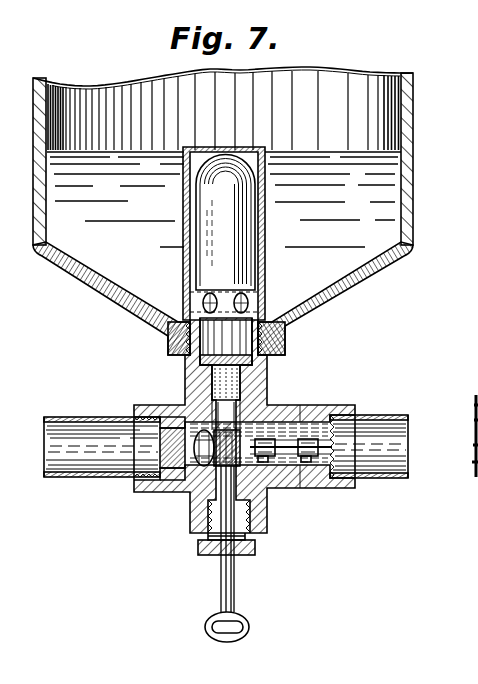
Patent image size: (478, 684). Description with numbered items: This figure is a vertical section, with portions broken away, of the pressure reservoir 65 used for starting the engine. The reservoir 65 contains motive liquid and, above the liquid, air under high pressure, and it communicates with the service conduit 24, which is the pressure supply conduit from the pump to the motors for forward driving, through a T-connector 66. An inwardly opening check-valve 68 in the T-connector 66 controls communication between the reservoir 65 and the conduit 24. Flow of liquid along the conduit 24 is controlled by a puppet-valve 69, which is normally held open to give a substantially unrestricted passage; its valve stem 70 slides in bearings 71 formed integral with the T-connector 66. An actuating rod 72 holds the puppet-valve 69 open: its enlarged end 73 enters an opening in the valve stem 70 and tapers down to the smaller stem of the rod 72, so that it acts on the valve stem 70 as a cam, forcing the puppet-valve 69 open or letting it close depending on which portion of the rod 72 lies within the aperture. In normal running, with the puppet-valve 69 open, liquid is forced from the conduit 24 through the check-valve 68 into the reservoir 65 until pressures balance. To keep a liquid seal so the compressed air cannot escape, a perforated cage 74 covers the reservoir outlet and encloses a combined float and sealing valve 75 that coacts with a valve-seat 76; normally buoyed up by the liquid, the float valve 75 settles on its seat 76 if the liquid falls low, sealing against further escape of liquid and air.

The pressure reservoir 65 is at (413, 128).
The perforated cage 74 is at (278, 236).
The combined float and sealing valve 75 is at (186, 214).
The check-valve 68 is at (243, 436).
The service conduit 24 is at (66, 423).
The puppet-valve 69 is at (178, 478).
The T-connector 66 is at (331, 424).
The enlarged end 73 is at (222, 454).
The valve stem 70 is at (284, 430).
The bearings 71 is at (306, 463).
The valve-seat 76 is at (270, 308).
The actuating rod 72 is at (238, 566).